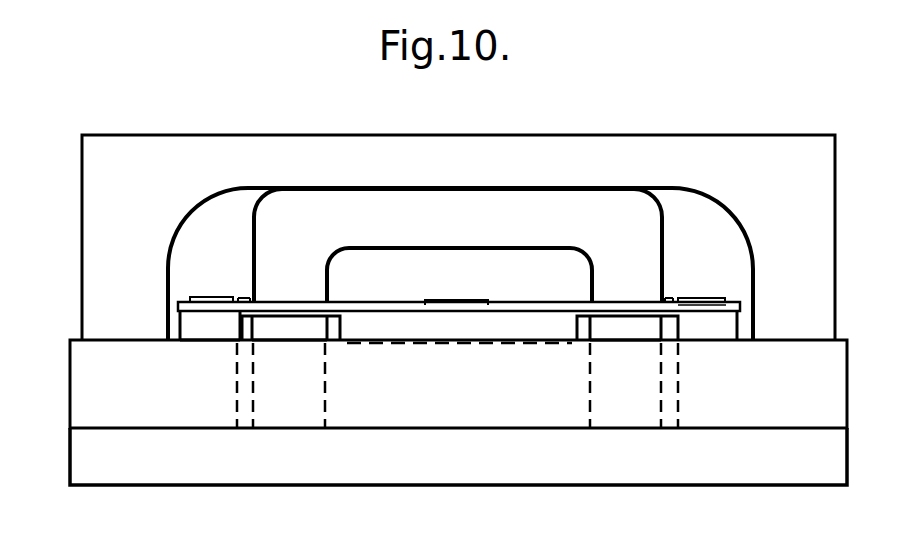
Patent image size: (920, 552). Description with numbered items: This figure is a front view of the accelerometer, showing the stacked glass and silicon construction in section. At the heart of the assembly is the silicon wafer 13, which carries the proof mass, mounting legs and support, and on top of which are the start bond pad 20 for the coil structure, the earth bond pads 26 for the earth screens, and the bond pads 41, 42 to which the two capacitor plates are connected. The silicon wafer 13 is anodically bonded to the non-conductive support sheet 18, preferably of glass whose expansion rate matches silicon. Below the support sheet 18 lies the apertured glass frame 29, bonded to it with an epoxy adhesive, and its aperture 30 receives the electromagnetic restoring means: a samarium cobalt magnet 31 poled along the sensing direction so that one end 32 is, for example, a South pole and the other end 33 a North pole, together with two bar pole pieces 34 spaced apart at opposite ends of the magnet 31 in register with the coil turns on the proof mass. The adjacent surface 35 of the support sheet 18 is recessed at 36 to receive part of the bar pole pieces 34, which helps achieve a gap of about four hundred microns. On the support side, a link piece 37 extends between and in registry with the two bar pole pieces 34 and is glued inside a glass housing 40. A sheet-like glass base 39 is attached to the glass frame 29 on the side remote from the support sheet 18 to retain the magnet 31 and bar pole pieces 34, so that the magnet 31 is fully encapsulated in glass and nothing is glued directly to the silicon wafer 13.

The silicon wafer 13 is at (742, 312).
The support sheet 18 is at (195, 325).
The start bond pad 20 is at (462, 302).
The earth bond pads 26 is at (222, 298).
The apertured glass frame 29 is at (835, 404).
The aperture 30 is at (247, 430).
The magnet 31 is at (486, 428).
The one end 32 is at (571, 428).
The other end 33 is at (347, 428).
The bar pole pieces 34 is at (292, 428).
The adjacent surface 35 is at (213, 336).
The recesses 36 is at (247, 340).
The link piece 37 is at (442, 232).
The glass base 39 is at (835, 466).
The glass housing 40 is at (443, 176).
The bond pad 41 is at (717, 302).
The bond pad 42 is at (203, 298).